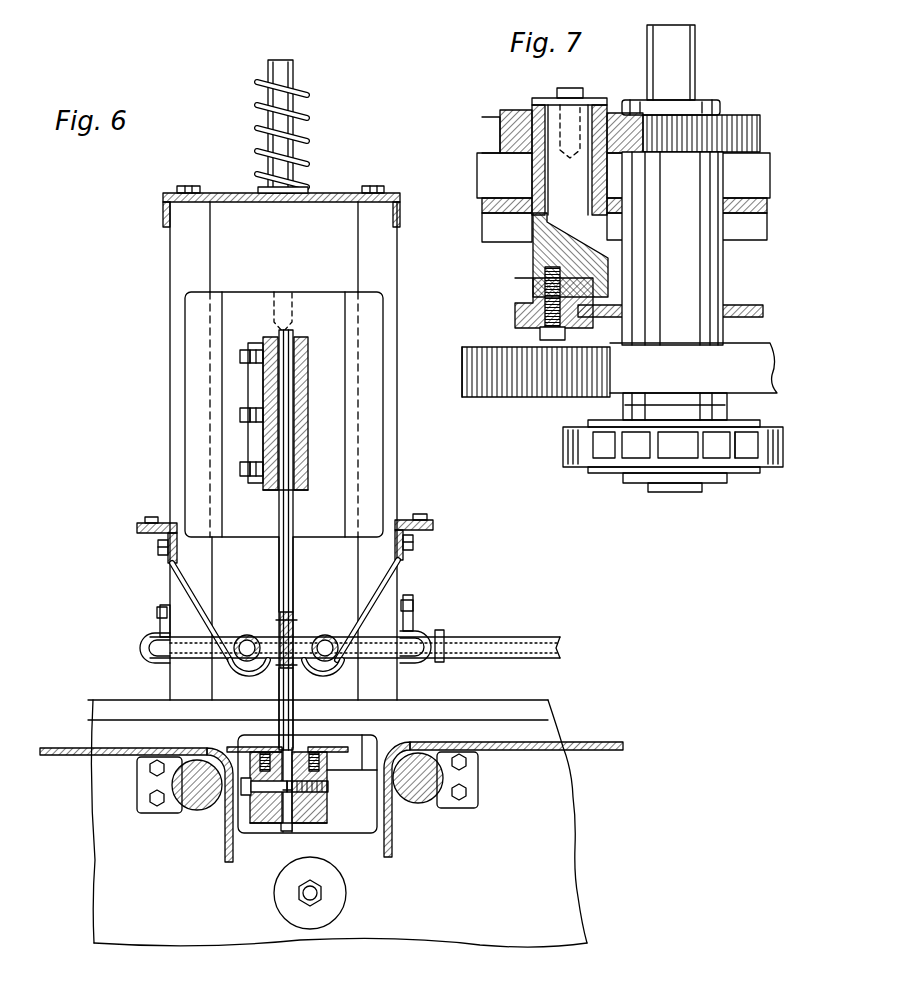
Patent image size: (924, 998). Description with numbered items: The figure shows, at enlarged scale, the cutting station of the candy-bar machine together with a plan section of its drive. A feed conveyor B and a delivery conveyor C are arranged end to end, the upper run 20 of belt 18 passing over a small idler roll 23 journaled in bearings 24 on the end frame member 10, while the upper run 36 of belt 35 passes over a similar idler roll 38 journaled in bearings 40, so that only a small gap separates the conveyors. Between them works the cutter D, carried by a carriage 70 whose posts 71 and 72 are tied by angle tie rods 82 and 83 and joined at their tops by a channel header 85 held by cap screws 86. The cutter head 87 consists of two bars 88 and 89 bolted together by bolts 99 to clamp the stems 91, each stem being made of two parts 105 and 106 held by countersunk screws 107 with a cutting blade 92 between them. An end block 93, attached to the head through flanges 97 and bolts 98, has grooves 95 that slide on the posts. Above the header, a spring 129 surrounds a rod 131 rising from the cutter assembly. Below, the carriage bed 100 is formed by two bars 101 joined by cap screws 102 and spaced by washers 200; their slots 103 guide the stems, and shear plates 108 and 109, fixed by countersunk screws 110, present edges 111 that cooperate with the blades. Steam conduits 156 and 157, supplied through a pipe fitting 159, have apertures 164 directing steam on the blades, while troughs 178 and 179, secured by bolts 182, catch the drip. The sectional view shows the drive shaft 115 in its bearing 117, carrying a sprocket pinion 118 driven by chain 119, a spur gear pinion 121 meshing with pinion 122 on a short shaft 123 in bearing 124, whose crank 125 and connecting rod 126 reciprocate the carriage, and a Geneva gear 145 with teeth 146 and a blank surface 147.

In FIG. 6, the end frame member 10 is at (112, 885).
In FIG. 6, the belt 18 is at (58, 747).
In FIG. 6, the upper run of belt 20 is at (40, 757).
In FIG. 6, the idler roll 23 is at (196, 795).
In FIG. 6, the bearings 24 is at (145, 792).
In FIG. 6, the belt 35 is at (595, 751).
In FIG. 6, the upper run of belt 36 is at (540, 742).
In FIG. 6, the idler roll 38 is at (417, 788).
In FIG. 6, the bearings 40 is at (468, 778).
In FIG. 6, the carriage 70 is at (168, 232).
In FIG. 6, the post 71 is at (180, 270).
In FIG. 6, the post 72 is at (380, 250).
In FIG. 6, the tie rod 82 is at (158, 545).
In FIG. 6, the tie rod 83 is at (413, 542).
In FIG. 6, the header 85 is at (232, 190).
In FIG. 6, the cap screws 86 is at (186, 185).
In FIG. 6, the cutter head 87 is at (308, 360).
In FIG. 6, the bar 88 is at (300, 416).
In FIG. 6, the bar 89 is at (300, 445).
In FIG. 6, the stems 91 is at (279, 512).
In FIG. 6, the cutting blades 92 is at (298, 654).
In FIG. 6, the end block 93 is at (340, 305).
In FIG. 6, the grooves 95 is at (212, 318).
In FIG. 6, the flanges 97 is at (256, 440).
In FIG. 6, the bolts 98 is at (242, 415).
In FIG. 6, the bolts 99 is at (258, 350).
In FIG. 6, the bed 100 is at (325, 803).
In FIG. 6, the bars 101 is at (266, 815).
In FIG. 6, the cap screws 102 is at (330, 788).
In FIG. 6, the slots 103 is at (272, 818).
In FIG. 6, the stem part 105 is at (279, 547).
In FIG. 6, the stem part 106 is at (294, 560).
In FIG. 6, the counter-sunk screws 107 is at (294, 608).
In FIG. 6, the shear plate 108 is at (232, 746).
In FIG. 6, the shear plate 109 is at (320, 745).
In FIG. 6, the counter-sunk screws 110 is at (270, 746).
In FIG. 6, the edges 111 is at (294, 746).
In FIG. 7, the shaft 115 is at (675, 65).
In FIG. 7, the bearing 117 is at (705, 225).
In FIG. 7, the sprocket pinion 118 is at (648, 468).
In FIG. 7, the sprocket chain 119 is at (756, 445).
In FIG. 7, the spur gear pinions 121 is at (740, 122).
In FIG. 7, the spur pinion 122 is at (522, 118).
In FIG. 7, the short shaft 123 is at (558, 110).
In FIG. 7, the bearing 124 is at (545, 224).
In FIG. 7, the crank 125 is at (525, 292).
In FIG. 7, the connecting rod 126 is at (665, 304).
In FIG. 6, the spring 129 is at (303, 122).
In FIG. 6, the spring shaft 131 is at (272, 95).
In FIG. 7, the Geneva gear 145 is at (550, 375).
In FIG. 7, the teeth 146 is at (490, 371).
In FIG. 7, the blank surface 147 is at (720, 365).
In FIG. 6, the steam conduit 156 is at (232, 672).
In FIG. 6, the steam conduit 157 is at (338, 662).
In FIG. 6, the pipe fitting 159 is at (445, 632).
In FIG. 6, the apertures 164 is at (262, 640).
In FIG. 6, the trough 178 is at (207, 600).
In FIG. 6, the trough 179 is at (380, 590).
In FIG. 6, the bolts 182 is at (150, 520).
In FIG. 6, the spacer washers 200 is at (298, 800).
In FIG. 6, the feed conveyor B is at (72, 758).
In FIG. 6, the delivery conveyor C is at (582, 740).
In FIG. 6, the cutter D is at (308, 466).